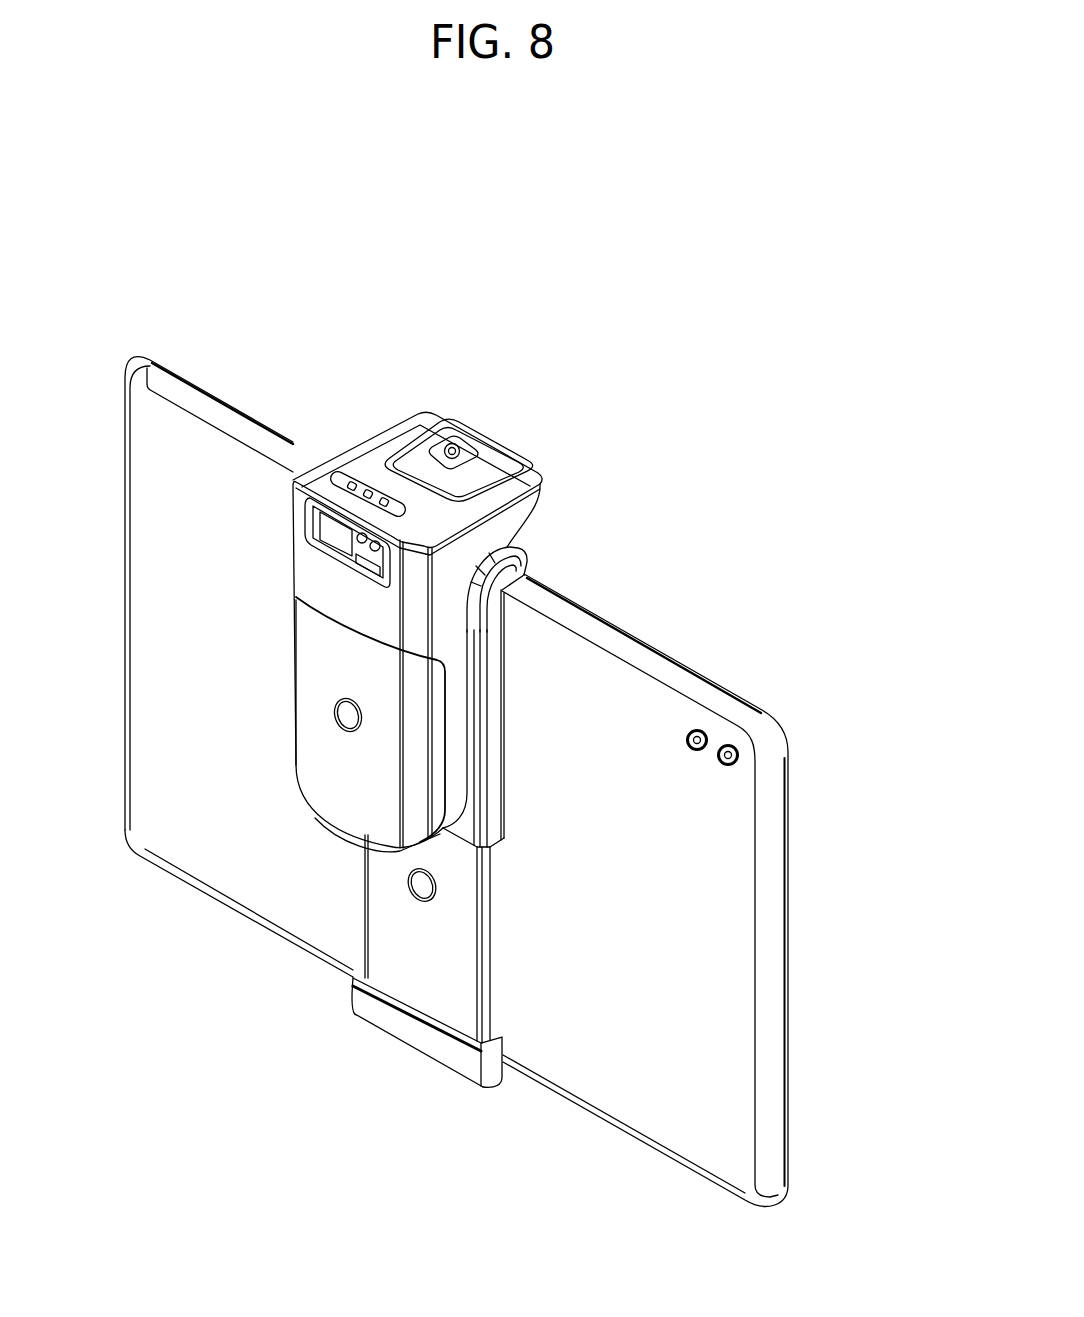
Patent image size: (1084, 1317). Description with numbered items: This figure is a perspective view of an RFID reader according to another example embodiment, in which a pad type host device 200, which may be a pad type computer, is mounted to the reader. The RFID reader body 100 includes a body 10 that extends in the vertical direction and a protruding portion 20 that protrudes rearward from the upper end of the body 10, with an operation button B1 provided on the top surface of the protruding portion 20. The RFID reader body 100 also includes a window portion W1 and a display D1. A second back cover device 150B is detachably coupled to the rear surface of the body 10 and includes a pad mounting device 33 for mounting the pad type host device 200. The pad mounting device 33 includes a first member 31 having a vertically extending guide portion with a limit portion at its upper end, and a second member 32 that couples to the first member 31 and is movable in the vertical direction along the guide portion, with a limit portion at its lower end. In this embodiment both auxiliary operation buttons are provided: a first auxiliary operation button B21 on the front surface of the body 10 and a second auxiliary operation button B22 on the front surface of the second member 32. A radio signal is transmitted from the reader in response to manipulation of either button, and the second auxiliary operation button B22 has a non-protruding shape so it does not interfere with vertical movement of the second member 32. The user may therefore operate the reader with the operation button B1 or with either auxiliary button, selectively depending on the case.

The RFID reader body 100 is at (277, 582).
The body 10 is at (318, 683).
The protruding portion 20 is at (519, 509).
The first member 31 is at (551, 559).
The second member 32 is at (386, 961).
The pad mounting device 33 is at (382, 1055).
The second back cover device 150B is at (451, 1105).
The pad type host device 200 is at (829, 958).
The window portion W1 is at (295, 527).
The display D1 is at (322, 463).
The operation button B1 is at (487, 427).
The first auxiliary operation button B21 is at (313, 715).
The second auxiliary operation button B22 is at (398, 901).